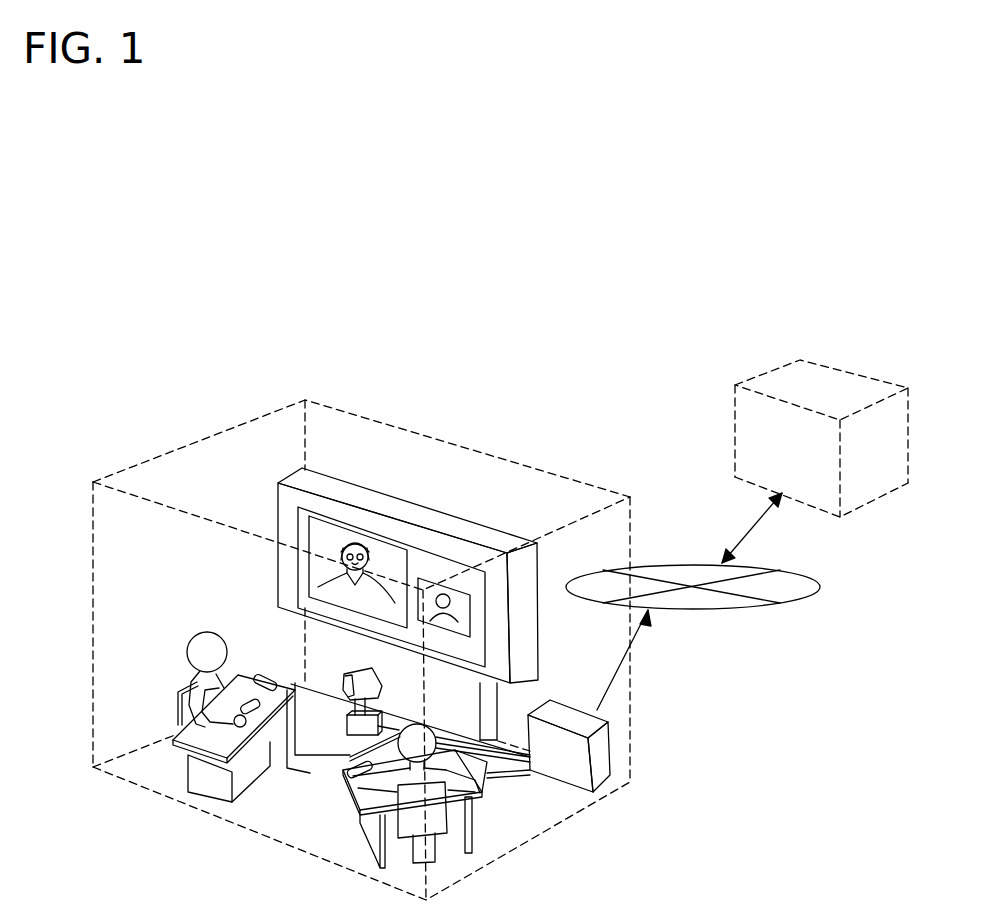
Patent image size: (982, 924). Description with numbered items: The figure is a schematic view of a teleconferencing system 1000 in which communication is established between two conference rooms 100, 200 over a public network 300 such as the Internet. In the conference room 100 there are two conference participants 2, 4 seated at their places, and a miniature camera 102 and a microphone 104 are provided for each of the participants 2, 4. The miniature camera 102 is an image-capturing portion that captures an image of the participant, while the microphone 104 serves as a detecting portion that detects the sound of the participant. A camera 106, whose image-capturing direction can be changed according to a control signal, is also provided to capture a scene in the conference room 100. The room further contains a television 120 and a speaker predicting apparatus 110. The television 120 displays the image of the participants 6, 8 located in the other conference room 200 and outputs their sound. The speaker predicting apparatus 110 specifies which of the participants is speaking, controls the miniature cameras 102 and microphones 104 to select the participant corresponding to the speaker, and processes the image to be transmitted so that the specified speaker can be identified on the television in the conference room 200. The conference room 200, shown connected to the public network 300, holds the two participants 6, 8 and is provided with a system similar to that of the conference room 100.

The teleconferencing system 1000 is at (529, 276).
The conference room 100 is at (455, 443).
The television 120 is at (433, 509).
The participant 6 is at (371, 553).
The participant 8 is at (443, 590).
The conference participant 2 is at (198, 634).
The conference participant 4 is at (423, 727).
The miniature camera 102 is at (252, 733).
The microphone 104 is at (262, 672).
The camera 106 is at (347, 664).
The speaker predicting apparatus 110 is at (587, 710).
The conference room 200 is at (773, 370).
The public network 300 is at (758, 609).